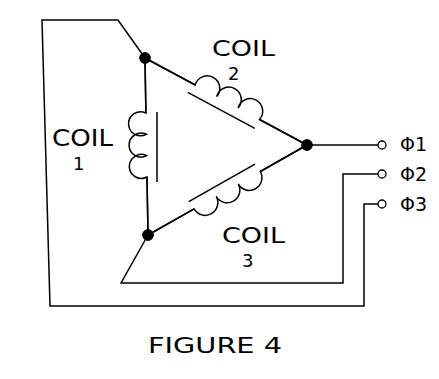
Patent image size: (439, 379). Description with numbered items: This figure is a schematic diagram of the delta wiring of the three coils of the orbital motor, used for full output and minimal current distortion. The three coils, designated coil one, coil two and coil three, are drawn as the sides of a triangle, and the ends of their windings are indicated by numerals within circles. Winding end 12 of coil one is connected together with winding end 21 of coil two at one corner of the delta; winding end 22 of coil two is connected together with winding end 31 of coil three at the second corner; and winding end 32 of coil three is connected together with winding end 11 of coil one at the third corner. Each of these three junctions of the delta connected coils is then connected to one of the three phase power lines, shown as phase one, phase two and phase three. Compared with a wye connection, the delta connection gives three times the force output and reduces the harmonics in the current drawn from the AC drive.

The winding end of coil 1 11 is at (122, 213).
The winding end of coil 1 12 is at (120, 80).
The winding end of coil 2 21 is at (168, 48).
The winding end of coil 2 22 is at (297, 116).
The winding end of coil 3 31 is at (298, 173).
The winding end of coil 3 32 is at (175, 245).